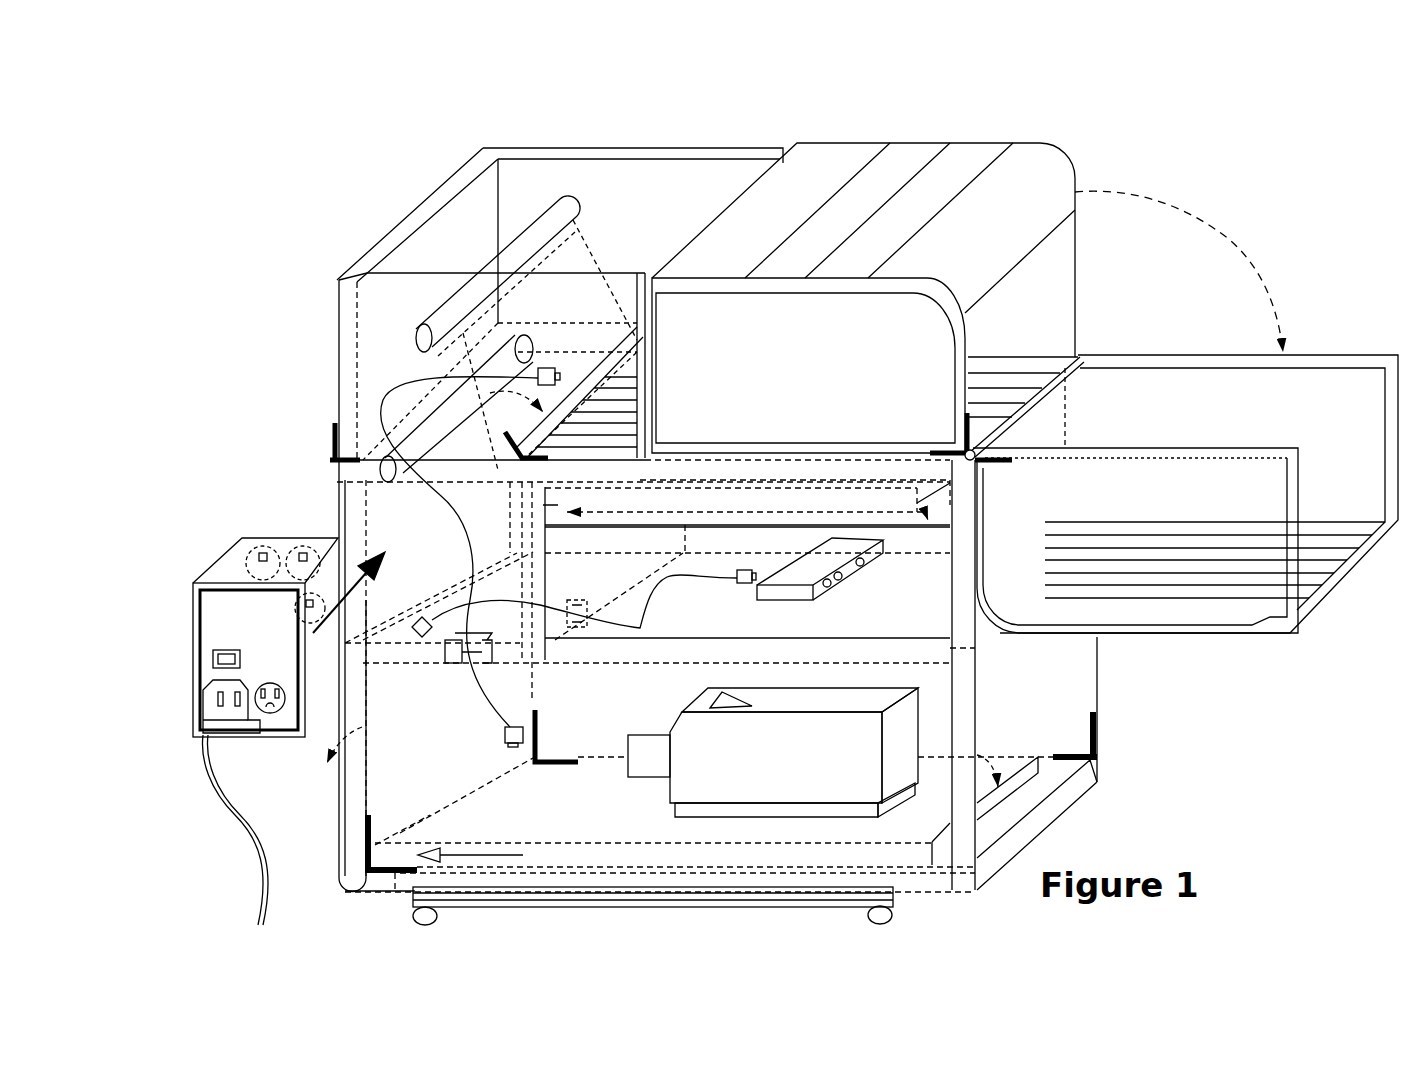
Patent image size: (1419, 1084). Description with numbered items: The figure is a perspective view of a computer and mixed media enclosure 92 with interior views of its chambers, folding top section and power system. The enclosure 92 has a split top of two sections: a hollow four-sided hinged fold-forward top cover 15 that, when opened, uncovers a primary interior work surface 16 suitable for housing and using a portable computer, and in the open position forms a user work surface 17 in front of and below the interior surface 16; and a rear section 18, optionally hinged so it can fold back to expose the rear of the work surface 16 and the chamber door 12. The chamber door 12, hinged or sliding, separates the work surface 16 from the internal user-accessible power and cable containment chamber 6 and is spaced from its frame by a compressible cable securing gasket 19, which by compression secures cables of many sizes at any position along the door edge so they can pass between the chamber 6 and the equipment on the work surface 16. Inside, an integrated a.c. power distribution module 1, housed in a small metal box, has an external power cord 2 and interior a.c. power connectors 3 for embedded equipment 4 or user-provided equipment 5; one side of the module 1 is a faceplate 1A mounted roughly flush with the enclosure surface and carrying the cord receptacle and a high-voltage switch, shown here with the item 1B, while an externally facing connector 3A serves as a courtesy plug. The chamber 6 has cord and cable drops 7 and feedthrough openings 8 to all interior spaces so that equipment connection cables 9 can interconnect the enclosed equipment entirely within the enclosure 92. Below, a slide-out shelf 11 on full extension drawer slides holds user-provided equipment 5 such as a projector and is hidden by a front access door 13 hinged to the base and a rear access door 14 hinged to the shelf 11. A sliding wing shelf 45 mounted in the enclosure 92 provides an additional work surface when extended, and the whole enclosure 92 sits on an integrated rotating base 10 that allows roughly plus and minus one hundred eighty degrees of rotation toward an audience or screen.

The power distribution module 1 is at (225, 550).
The faceplate 1A is at (257, 740).
The power switch 1B is at (240, 653).
The external power cord 2 is at (256, 798).
The interior a.c. power connectors 3 is at (322, 585).
The externally facing a.c. power connector 3A is at (287, 702).
The embedded electronic equipment 4 is at (813, 542).
The user-provided housed electronic equipment 5 is at (668, 728).
The power and cable containment chamber 6 is at (390, 518).
The cord and cable drops 7 is at (458, 650).
The feedthrough openings 8 is at (600, 578).
The equipment connection cables 9 is at (637, 627).
The rotating base 10 is at (663, 910).
The slide-out shelf 11 is at (695, 853).
The chamber door 12 is at (597, 253).
The front access door 13 is at (975, 742).
The rear access door 14 is at (347, 772).
The fold-forward top cover 15 is at (1140, 355).
The primary interior work surface 16 is at (1030, 358).
The user work surface 17 is at (1317, 538).
The rear section 18 is at (392, 227).
The cable securing gasket 19 is at (535, 220).
The wing shelf 45 is at (662, 527).
The enclosure 92 is at (1087, 792).